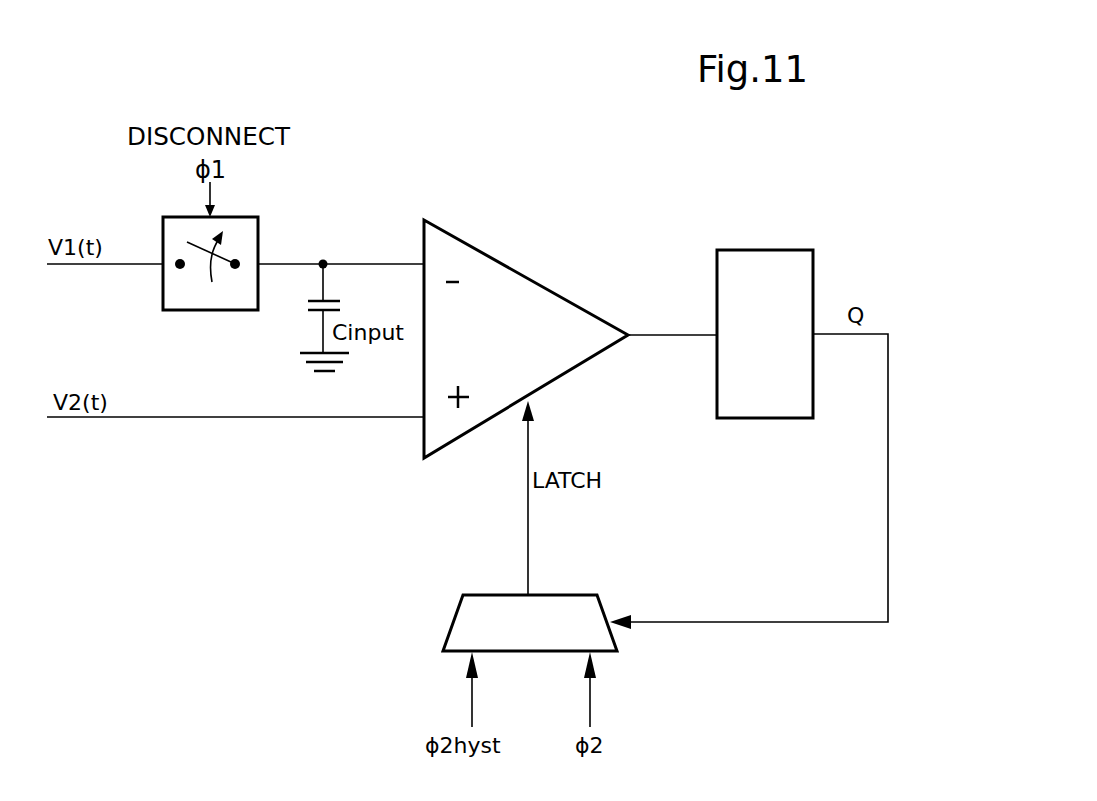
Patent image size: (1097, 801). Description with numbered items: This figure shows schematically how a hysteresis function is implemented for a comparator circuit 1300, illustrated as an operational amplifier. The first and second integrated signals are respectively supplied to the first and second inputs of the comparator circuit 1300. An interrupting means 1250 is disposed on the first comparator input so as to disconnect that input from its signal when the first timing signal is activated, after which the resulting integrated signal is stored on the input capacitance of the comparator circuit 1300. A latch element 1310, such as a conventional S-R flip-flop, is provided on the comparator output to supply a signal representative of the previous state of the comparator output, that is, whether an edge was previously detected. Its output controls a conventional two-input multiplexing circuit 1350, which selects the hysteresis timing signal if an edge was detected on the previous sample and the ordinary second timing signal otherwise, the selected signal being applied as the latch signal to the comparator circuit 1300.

The interrupting means 1250 is at (213, 311).
The comparator circuit 1300 is at (523, 296).
The latch element 1310 is at (763, 262).
The multiplexing circuit 1350 is at (478, 603).